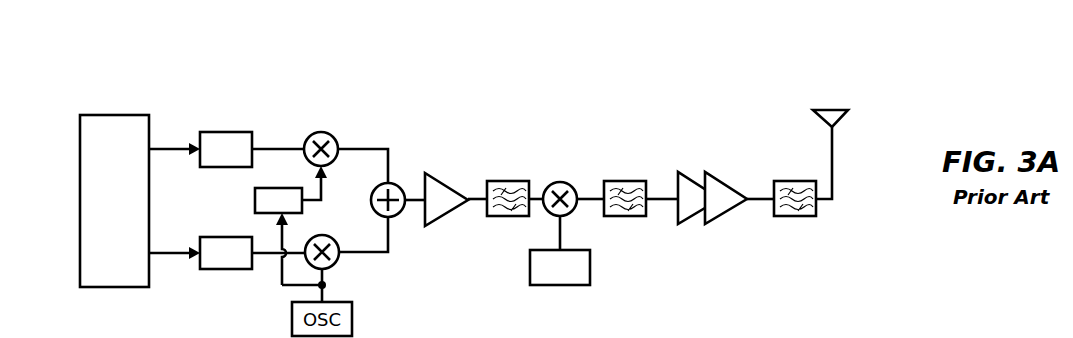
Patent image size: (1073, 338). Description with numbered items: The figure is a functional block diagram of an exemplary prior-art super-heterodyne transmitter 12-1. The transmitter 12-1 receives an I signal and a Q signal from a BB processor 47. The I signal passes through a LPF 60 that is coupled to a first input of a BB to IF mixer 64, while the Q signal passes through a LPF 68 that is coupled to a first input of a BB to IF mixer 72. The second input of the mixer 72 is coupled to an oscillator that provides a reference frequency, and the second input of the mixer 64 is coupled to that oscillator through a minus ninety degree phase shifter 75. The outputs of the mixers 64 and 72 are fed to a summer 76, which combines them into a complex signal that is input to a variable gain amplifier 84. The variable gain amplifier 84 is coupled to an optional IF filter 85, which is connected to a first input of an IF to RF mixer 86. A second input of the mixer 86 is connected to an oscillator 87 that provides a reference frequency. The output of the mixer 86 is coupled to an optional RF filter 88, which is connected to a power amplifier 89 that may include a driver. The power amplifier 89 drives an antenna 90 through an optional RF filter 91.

The super-heterodyne transmitter 12-1 is at (170, 63).
The BB processor 47 is at (120, 115).
The LPF 60 is at (220, 132).
The BB to IF mixer 64 is at (333, 133).
The LPF 68 is at (229, 270).
The BB to IF mixer 72 is at (340, 264).
The −90° phase shifter 75 is at (255, 199).
The summer 76 is at (393, 182).
The variable gain amplifier (VGA) 84 is at (446, 183).
The optional IF filter 85 is at (507, 176).
The IF to RF mixer 86 is at (567, 184).
The oscillator 87 is at (565, 287).
The optional RF filter 88 is at (622, 181).
The power amplifier 89 is at (732, 182).
The antenna 90 is at (842, 118).
The optional RF filter 91 is at (792, 216).